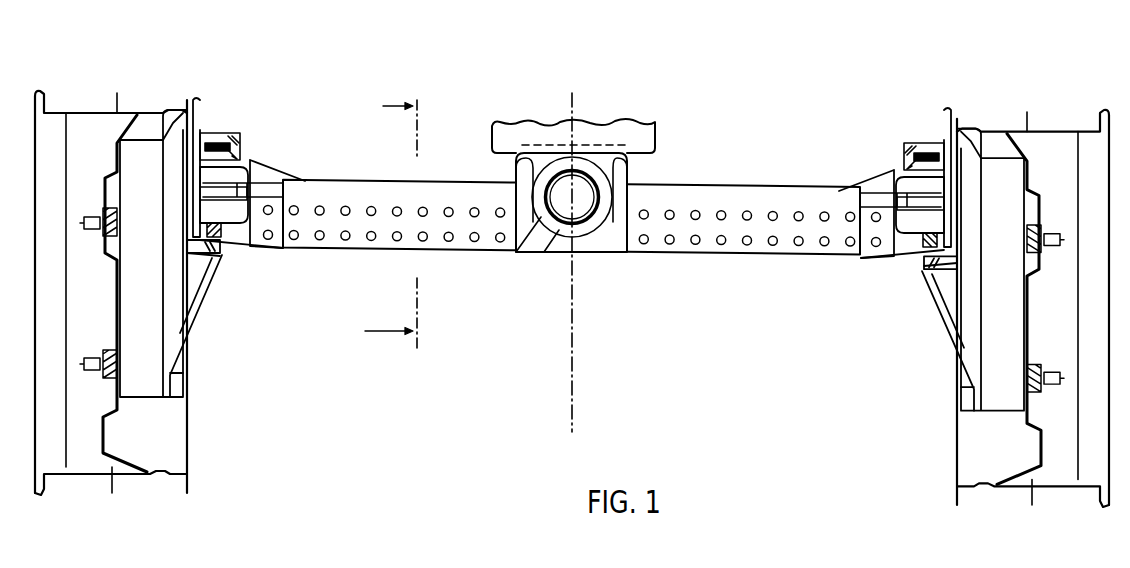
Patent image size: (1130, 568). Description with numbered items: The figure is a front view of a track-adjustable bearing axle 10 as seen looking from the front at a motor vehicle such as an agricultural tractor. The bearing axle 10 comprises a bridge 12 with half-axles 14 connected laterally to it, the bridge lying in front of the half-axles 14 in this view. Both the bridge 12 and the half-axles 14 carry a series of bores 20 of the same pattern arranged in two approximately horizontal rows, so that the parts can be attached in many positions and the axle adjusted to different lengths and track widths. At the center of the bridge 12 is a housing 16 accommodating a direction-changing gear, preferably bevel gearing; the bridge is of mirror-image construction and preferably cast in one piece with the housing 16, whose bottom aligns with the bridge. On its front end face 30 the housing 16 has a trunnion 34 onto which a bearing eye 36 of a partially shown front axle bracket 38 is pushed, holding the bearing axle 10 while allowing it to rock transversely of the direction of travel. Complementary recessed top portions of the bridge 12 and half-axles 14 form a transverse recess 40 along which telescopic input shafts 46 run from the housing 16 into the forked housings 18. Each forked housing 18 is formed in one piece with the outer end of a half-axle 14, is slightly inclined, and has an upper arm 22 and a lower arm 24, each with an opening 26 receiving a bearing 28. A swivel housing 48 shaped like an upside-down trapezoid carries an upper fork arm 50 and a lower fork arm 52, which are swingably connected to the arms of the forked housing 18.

The bearing axle 10 is at (572, 271).
The bridge 12 is at (572, 207).
The half-axles 14 is at (443, 181).
The housing 16 is at (543, 254).
The forked housing 18 is at (263, 140).
The bores 20 is at (332, 241).
The upper arm 22 is at (243, 136).
The lower arm 24 is at (238, 247).
The opening 26 is at (247, 175).
The bearing 28 is at (193, 133).
The front end face 30 is at (602, 254).
The trunnion 34 is at (578, 222).
The bearing eyes 36 is at (515, 253).
The front axle bracket 38 is at (542, 130).
The recess 40 is at (283, 172).
The telescopic input shafts 46 is at (255, 248).
The swivel housing 48 is at (146, 334).
The upper fork arm 50 is at (170, 137).
The lower fork arm 52 is at (222, 259).